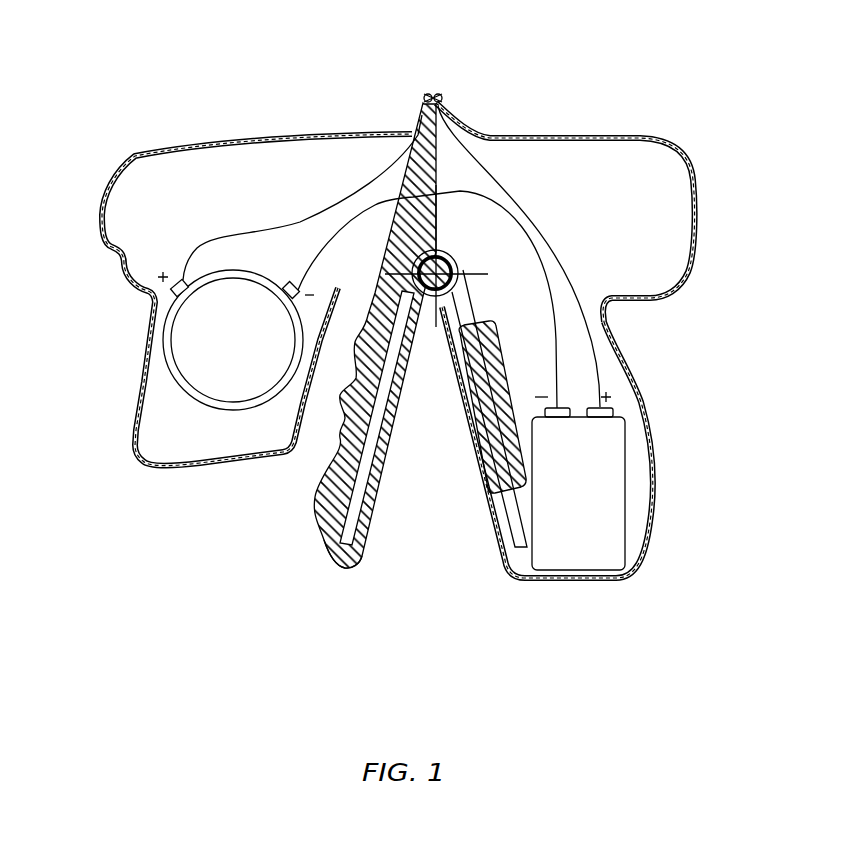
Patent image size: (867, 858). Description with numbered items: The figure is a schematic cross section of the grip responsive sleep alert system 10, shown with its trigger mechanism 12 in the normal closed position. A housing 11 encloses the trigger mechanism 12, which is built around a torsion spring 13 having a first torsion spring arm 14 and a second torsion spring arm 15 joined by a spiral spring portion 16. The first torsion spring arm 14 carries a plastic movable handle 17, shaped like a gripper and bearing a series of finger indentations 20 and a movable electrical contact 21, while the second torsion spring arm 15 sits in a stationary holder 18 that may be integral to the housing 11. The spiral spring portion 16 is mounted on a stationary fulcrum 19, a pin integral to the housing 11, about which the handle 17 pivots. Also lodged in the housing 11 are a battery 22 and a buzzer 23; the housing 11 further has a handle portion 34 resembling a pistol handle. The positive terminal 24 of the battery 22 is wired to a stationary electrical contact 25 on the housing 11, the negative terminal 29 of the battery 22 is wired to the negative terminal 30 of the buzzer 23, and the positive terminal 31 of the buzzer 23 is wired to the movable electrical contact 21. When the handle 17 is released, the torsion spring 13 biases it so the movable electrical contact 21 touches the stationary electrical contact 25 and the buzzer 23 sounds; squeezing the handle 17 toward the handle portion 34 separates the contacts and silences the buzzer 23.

The grip responsive sleep alert system 10 is at (595, 80).
The housing 11 is at (656, 175).
The trigger mechanism 12 is at (258, 543).
The torsion spring 13 is at (470, 262).
The first torsion spring arm 14 is at (365, 470).
The second torsion spring arm 15 is at (514, 503).
The spiral spring portion 16 is at (441, 252).
The movable handle 17 is at (348, 560).
The stationary holder 18 is at (492, 365).
The stationary fulcrum 19 is at (437, 260).
The finger indentations 20 is at (325, 430).
The movable electrical contact 21 is at (427, 97).
The battery 22 is at (598, 505).
The buzzer 23 is at (212, 335).
The positive terminal 24 is at (605, 413).
The stationary electrical contact 25 is at (440, 97).
The negative terminal 29 is at (558, 418).
The negative terminal of the buzzer 30 is at (303, 299).
The positive terminal of the buzzer 31 is at (160, 300).
The handle portion 34 is at (640, 390).